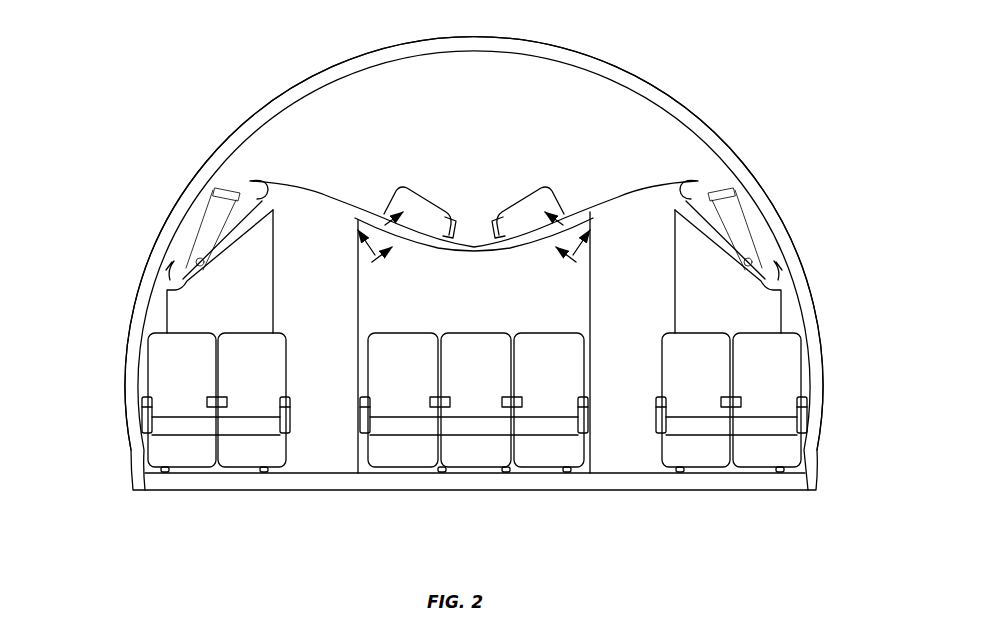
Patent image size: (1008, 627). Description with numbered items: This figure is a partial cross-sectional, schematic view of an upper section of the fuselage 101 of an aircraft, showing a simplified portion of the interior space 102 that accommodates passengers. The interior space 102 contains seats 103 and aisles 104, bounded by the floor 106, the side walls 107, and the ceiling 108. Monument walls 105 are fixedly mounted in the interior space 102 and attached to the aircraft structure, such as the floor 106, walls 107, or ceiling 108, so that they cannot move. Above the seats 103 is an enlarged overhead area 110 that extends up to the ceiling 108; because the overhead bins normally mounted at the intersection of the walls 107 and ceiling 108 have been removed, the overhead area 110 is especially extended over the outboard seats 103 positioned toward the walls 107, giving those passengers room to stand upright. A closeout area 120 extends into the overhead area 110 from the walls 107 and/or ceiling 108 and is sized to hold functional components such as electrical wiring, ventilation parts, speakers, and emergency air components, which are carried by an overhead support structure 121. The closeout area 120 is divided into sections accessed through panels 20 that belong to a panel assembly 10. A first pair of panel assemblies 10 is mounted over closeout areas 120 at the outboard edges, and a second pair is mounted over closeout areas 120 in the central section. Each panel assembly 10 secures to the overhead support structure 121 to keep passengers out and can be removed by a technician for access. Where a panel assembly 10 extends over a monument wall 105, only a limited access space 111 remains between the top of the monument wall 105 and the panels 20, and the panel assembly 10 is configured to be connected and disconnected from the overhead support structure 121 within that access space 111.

The panel assembly 10 is at (228, 264).
The panel 20 is at (200, 257).
The fuselage 101 is at (652, 80).
The interior space 102 is at (362, 222).
The seats 103 is at (540, 385).
The aisles 104 is at (327, 437).
The monument walls 105 is at (183, 315).
The floor 106 is at (300, 481).
The walls 107 is at (136, 298).
The ceiling 108 is at (280, 183).
The overhead area 110 is at (320, 213).
The access space 111 is at (230, 239).
The closeout area 120 is at (420, 215).
The overhead support structure 121 is at (188, 232).